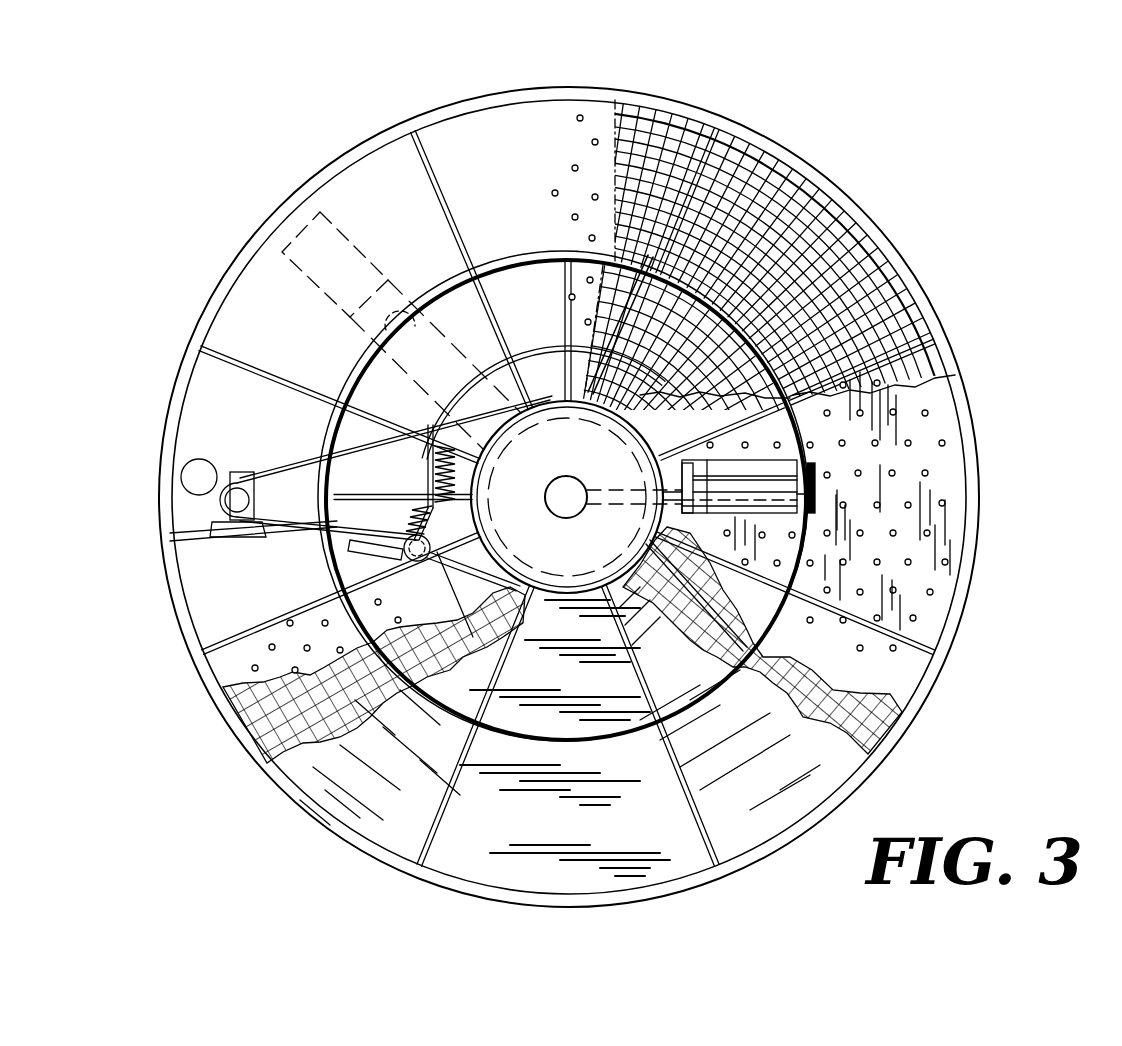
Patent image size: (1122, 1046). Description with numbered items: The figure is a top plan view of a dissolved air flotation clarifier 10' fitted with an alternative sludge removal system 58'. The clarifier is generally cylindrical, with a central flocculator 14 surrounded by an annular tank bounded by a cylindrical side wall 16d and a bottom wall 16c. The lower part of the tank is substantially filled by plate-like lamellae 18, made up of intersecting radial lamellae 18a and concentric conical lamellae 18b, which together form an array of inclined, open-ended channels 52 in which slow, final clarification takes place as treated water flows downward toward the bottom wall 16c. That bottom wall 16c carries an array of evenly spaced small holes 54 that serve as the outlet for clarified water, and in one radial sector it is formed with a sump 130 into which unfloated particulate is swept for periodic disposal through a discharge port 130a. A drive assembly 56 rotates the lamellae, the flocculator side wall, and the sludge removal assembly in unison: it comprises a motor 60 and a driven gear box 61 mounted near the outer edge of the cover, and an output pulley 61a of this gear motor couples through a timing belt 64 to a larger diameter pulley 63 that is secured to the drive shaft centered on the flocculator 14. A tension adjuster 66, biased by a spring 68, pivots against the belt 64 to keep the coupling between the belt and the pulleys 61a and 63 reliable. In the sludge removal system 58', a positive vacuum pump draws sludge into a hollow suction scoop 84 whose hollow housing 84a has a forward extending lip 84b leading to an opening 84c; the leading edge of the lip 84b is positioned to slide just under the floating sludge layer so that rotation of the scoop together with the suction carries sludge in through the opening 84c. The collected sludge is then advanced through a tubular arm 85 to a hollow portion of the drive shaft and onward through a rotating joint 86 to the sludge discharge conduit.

The central flocculator 14 is at (532, 136).
The inclined open-ended channels 52 is at (670, 132).
The plate-like lamellae 18 is at (792, 172).
The radial lamellae 18a is at (750, 185).
The concentric conical lamellae 18b is at (830, 210).
The clarifier 10' is at (649, 445).
The sump 130 is at (350, 240).
The discharge port 130a is at (393, 308).
The cylindrical side wall 16d is at (923, 282).
The bottom wall 16c is at (940, 430).
The small holes 54 is at (925, 475).
The drive assembly 56 is at (185, 450).
The motor 60 is at (203, 459).
The gear box 61 is at (247, 480).
The output pulley 61a is at (249, 500).
The timing belt 64 is at (352, 546).
The tension adjuster 66 is at (420, 562).
The spring 68 is at (425, 470).
The larger diameter pulley 63 is at (543, 402).
The rotating joint 86 is at (566, 478).
The tubular arm 85 is at (612, 490).
The hollow housing 84a is at (662, 512).
The alternative sludge removal system 58' is at (716, 431).
The forward extending lip 84b is at (728, 460).
The opening 84c is at (757, 462).
The hollow suction scoop 84 is at (790, 456).